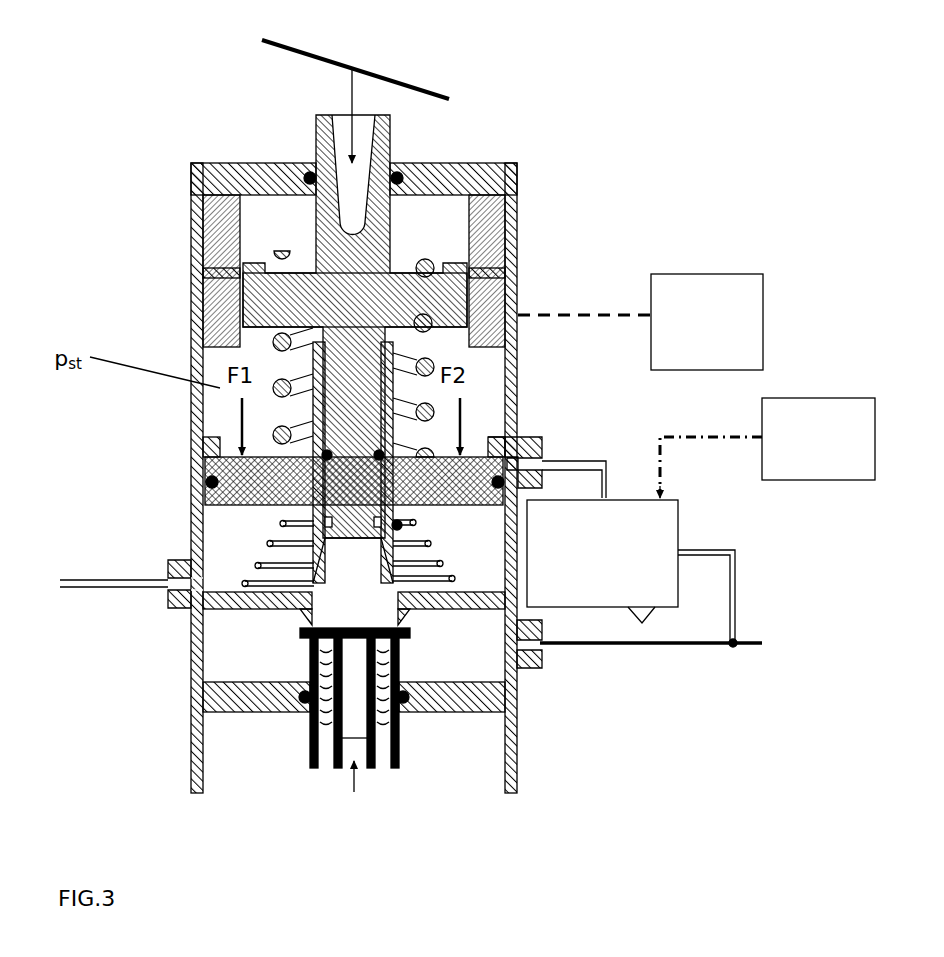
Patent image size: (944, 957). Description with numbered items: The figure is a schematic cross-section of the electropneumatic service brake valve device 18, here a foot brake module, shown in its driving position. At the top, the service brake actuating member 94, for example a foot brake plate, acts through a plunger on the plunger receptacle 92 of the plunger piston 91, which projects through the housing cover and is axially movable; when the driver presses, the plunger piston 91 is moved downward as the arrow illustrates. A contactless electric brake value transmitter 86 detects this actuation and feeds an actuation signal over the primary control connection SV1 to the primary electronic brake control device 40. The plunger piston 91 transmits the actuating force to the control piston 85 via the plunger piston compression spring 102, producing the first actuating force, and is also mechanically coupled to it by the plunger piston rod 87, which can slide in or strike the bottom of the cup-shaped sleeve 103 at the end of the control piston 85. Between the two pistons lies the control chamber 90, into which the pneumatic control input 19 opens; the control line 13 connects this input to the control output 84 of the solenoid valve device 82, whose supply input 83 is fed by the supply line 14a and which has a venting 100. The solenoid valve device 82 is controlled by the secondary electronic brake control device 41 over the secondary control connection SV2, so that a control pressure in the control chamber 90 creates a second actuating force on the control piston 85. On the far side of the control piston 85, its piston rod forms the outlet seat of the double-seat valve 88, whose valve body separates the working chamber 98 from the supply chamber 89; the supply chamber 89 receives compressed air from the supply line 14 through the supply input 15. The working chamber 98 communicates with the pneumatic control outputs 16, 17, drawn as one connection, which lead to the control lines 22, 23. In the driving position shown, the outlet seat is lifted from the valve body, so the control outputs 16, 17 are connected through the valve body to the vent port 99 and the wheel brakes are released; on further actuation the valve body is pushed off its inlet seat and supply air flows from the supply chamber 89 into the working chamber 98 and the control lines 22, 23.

The service brake valve device 18 is at (630, 183).
The service brake actuating member 94 is at (305, 52).
The plunger receptacle 92 is at (318, 153).
The brake value transmitter 86 is at (482, 200).
The plunger piston 91 is at (300, 283).
The plunger piston rod 87 is at (313, 368).
The control chamber 90 is at (215, 409).
The sleeve 103 is at (207, 478).
The working chamber 98 is at (235, 545).
The plunger piston compression spring 102 is at (515, 312).
The control piston 85 is at (515, 437).
The pneumatic control input 19 is at (545, 457).
The control line 13 is at (603, 462).
The control output 84 is at (605, 498).
The supply input 83 is at (678, 550).
The solenoid valve device 82 is at (602, 553).
The primary electronic brake control device 40 is at (707, 322).
The secondary electronic brake control device 41 is at (818, 439).
The primary control connection SV1 is at (597, 318).
The secondary control connection SV2 is at (718, 433).
The pneumatic control line 22 is at (114, 552).
The pneumatic control line 23 is at (75, 578).
The pneumatic control output 16 is at (138, 604).
The pneumatic control output 17 is at (163, 587).
The double-seat valve 88 is at (289, 622).
The supply chamber 89 is at (457, 646).
The supply input 15 is at (543, 648).
The supply line 14 is at (700, 647).
The supply line 14a is at (727, 548).
The venting 100 is at (642, 623).
The vent port 99 is at (353, 798).